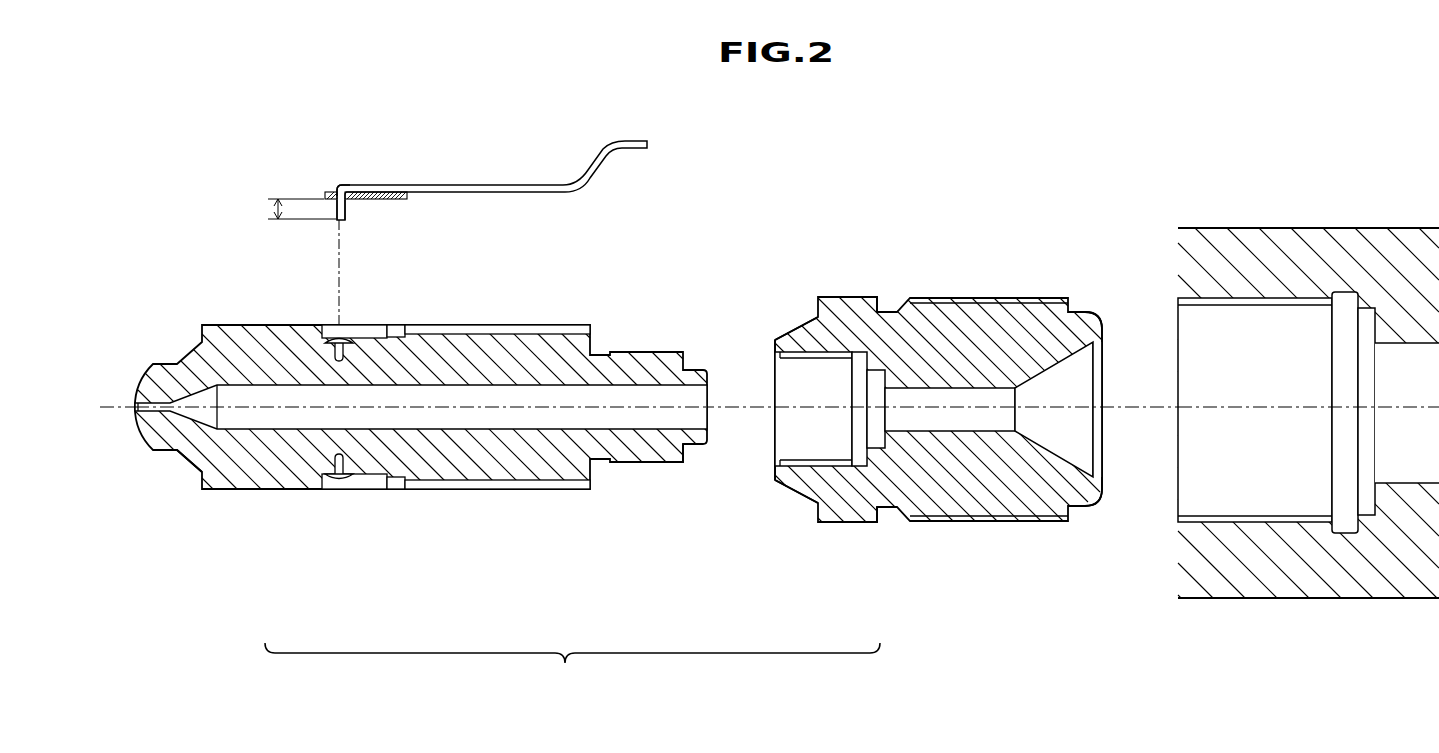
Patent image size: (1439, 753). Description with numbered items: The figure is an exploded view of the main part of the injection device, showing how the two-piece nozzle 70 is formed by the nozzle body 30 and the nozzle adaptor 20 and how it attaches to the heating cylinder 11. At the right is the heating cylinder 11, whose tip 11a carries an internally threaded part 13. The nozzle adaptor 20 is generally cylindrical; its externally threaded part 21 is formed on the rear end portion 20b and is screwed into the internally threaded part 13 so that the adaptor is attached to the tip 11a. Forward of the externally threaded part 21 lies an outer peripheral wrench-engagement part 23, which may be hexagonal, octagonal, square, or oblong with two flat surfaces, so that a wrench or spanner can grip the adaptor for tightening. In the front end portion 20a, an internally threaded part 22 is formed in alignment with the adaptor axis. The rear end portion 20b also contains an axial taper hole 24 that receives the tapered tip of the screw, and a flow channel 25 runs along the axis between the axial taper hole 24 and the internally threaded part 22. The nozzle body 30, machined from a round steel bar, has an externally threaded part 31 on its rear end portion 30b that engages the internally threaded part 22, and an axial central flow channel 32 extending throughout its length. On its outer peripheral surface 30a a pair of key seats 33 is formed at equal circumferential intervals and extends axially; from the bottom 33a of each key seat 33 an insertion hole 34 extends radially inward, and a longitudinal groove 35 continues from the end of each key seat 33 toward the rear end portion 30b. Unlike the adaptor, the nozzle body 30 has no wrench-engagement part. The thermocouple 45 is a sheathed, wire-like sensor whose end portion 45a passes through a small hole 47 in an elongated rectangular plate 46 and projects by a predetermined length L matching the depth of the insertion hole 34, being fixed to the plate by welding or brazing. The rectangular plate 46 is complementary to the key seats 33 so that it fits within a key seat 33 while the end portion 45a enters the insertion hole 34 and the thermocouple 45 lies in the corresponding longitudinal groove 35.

The heating cylinder 11 is at (1284, 418).
The tip of the heating cylinder 11a is at (1200, 590).
The internally threaded part 13 is at (1217, 307).
The nozzle adaptor 20 is at (943, 442).
The front end portion of the nozzle adaptor 20a is at (790, 482).
The rear end portion of the nozzle adaptor 20b is at (1078, 506).
The externally threaded part 21 is at (990, 297).
The internally threaded part 22 is at (793, 385).
The wrench-engagement part 23 is at (856, 296).
The axial taper hole 24 is at (1068, 364).
The flow channel 25 is at (985, 405).
The nozzle body 30 is at (421, 458).
The outer peripheral surface 30a is at (222, 490).
The rear end portion of the nozzle body 30b is at (657, 452).
The externally threaded part 31 is at (637, 351).
The axial central flow channel 32 is at (512, 415).
The key seat 33 is at (330, 331).
The bottom of the key seat 33a is at (389, 333).
The insertion hole 34 is at (345, 336).
The longitudinal groove 35 is at (478, 331).
The thermocouple 45 is at (570, 182).
The end portion of the thermocouple 45a is at (335, 210).
The rectangular plate 46 is at (396, 199).
The small hole 47 is at (349, 195).
The two-piece nozzle 70 is at (572, 669).